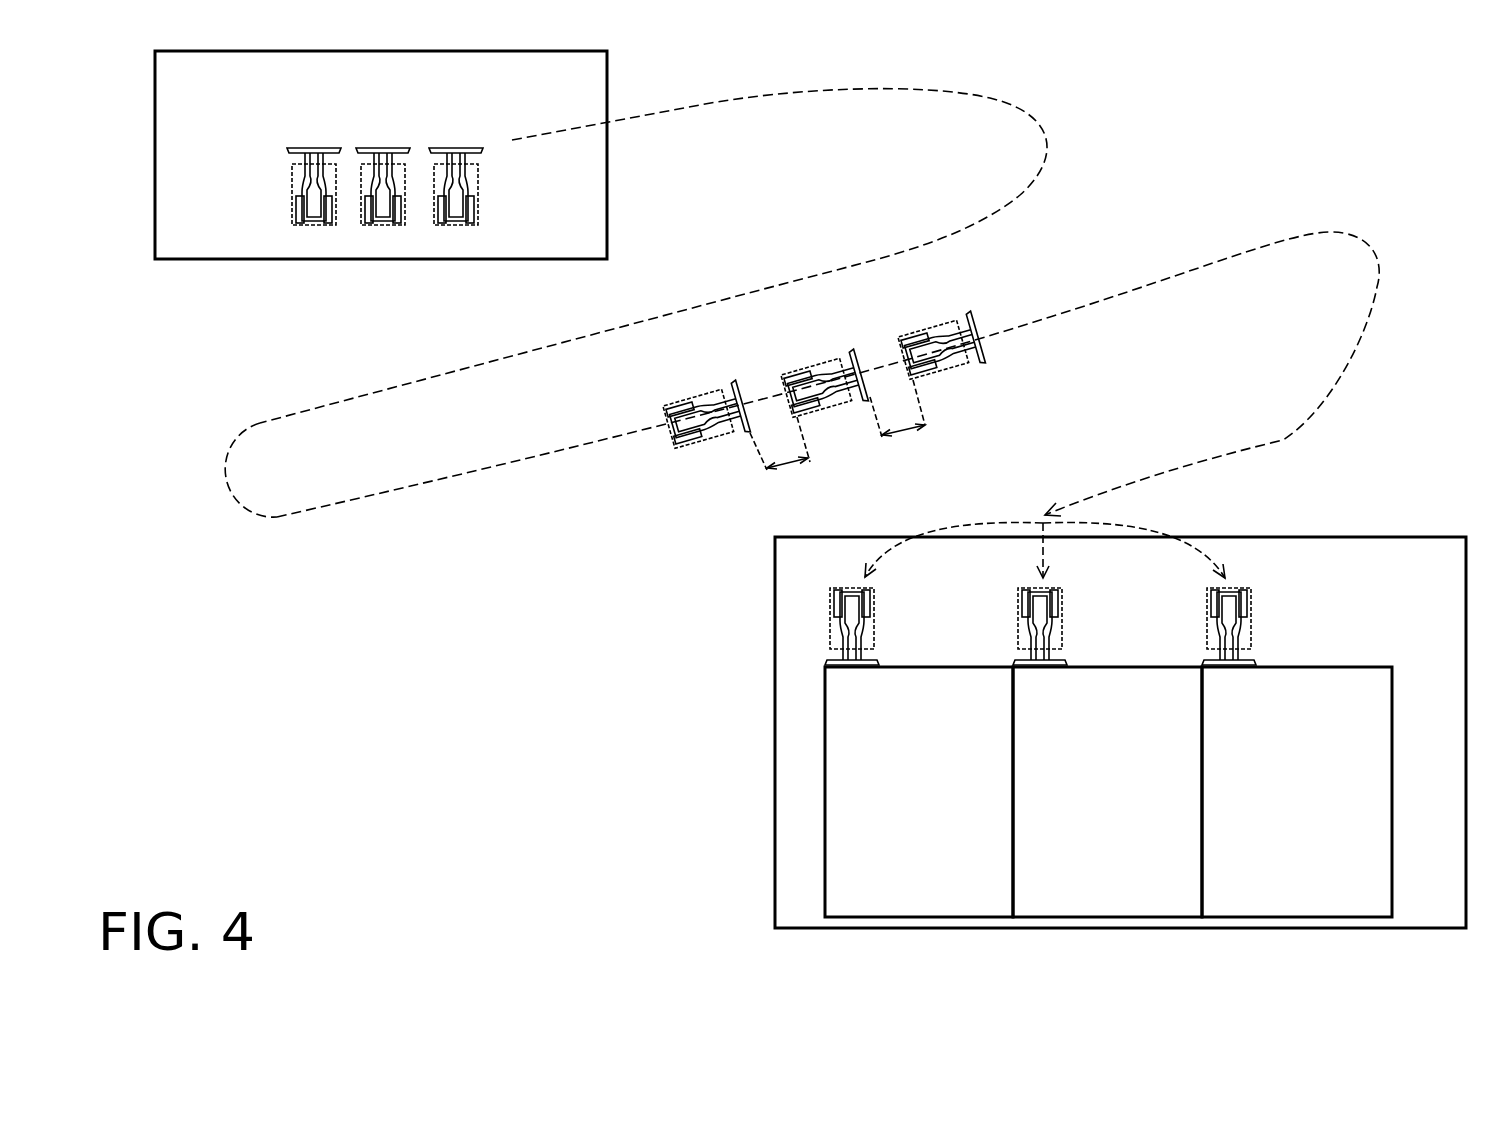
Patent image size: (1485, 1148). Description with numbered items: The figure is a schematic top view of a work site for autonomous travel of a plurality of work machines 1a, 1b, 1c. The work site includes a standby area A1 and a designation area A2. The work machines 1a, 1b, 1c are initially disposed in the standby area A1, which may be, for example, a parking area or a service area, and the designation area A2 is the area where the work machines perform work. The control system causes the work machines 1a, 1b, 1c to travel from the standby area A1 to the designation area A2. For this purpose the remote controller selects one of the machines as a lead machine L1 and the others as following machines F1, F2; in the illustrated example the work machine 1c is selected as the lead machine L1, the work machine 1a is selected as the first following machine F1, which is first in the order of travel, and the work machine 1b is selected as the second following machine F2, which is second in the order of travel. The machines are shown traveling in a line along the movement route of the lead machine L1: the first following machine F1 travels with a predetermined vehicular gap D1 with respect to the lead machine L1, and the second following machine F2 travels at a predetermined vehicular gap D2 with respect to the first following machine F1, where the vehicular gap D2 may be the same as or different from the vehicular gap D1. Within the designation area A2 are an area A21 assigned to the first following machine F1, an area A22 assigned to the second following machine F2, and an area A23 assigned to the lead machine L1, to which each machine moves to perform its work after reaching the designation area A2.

The work machine 1a is at (458, 147).
The work machine 1b is at (385, 147).
The work machine 1c is at (315, 147).
The standby area A1 is at (233, 260).
The designation area A2 is at (1377, 535).
The area assigned to the first following machine A21 is at (1139, 800).
The area assigned to the second following machine A22 is at (1329, 800).
The area assigned to the lead machine A23 is at (951, 800).
The first following machine F1 is at (822, 362).
The second following machine F2 is at (703, 397).
The lead machine L1 is at (942, 322).
The vehicular gap D1 is at (906, 427).
The vehicular gap D2 is at (789, 463).